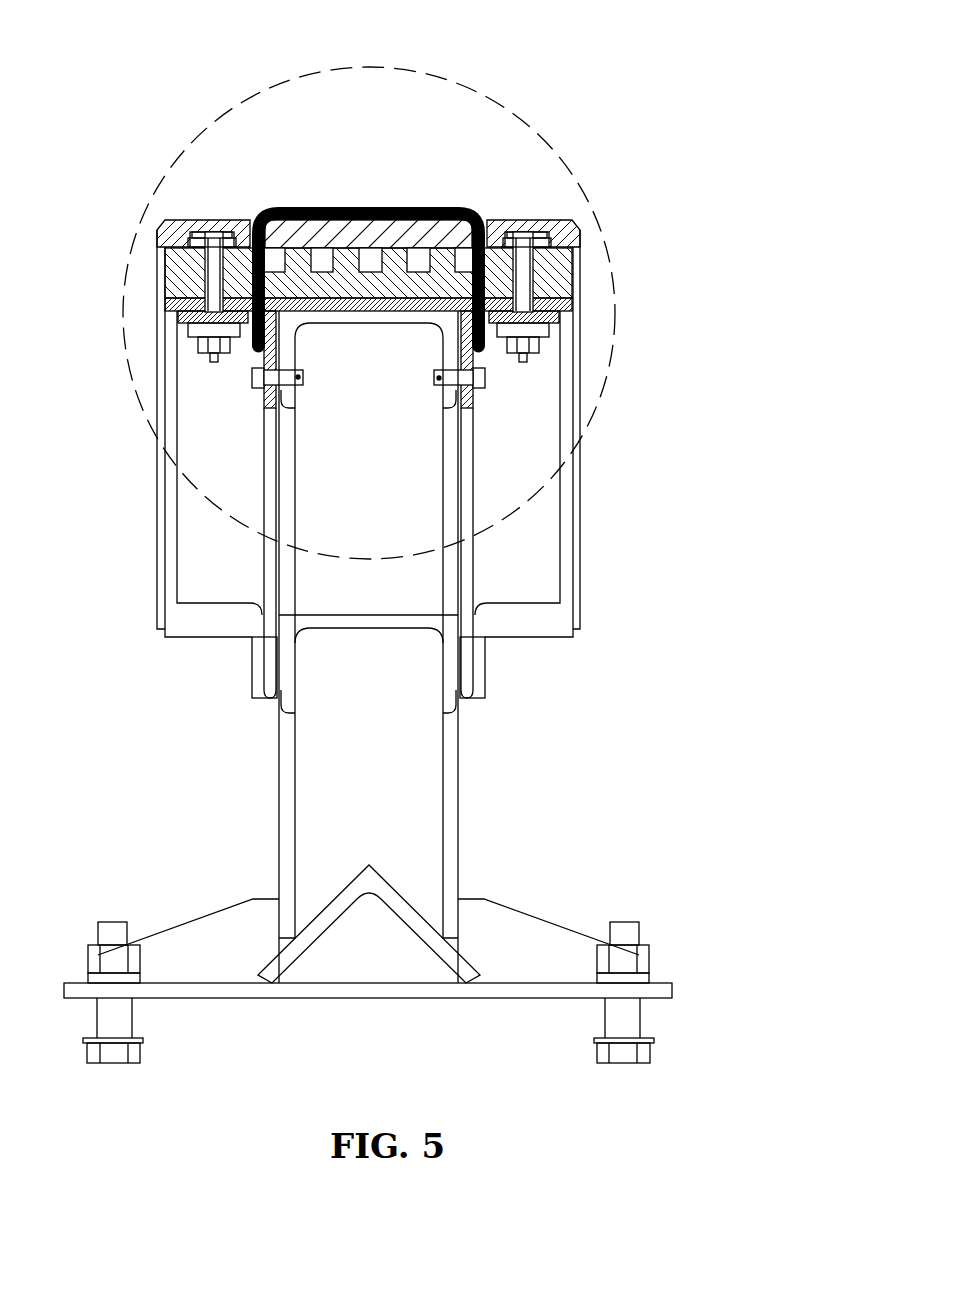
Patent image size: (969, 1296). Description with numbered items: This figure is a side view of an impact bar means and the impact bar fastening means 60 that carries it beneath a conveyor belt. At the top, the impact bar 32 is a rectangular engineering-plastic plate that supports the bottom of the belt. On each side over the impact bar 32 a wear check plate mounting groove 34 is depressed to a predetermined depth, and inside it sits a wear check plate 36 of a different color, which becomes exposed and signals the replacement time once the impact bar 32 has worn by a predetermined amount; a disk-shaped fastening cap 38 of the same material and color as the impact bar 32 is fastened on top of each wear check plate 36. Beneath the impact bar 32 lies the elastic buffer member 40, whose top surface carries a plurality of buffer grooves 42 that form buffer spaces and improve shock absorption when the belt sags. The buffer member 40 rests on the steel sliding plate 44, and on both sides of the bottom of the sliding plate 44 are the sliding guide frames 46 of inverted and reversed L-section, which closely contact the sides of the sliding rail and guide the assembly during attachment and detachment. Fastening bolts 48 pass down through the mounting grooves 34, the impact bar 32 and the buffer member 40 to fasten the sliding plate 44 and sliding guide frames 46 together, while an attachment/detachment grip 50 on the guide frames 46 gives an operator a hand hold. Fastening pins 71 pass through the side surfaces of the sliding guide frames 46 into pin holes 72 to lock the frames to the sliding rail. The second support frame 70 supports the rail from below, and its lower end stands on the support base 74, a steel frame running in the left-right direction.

The impact bar 32 is at (570, 237).
The wear check plate mounting groove 34 is at (185, 230).
The wear check plate 36 is at (183, 236).
The fastening cap 38 is at (225, 236).
The buffer member 40 is at (563, 273).
The buffer grooves 42 is at (465, 261).
The sliding plate 44 is at (570, 302).
The sliding guide frames 46 is at (262, 393).
The fastening bolts 48 is at (212, 277).
The attachment/detachment grip 50 is at (372, 207).
The impact bar fastening means 60 is at (575, 761).
The second support frame 70 is at (458, 798).
The fastening pins 71 is at (485, 378).
The pin holes 72 is at (462, 408).
The support base 74 is at (510, 990).